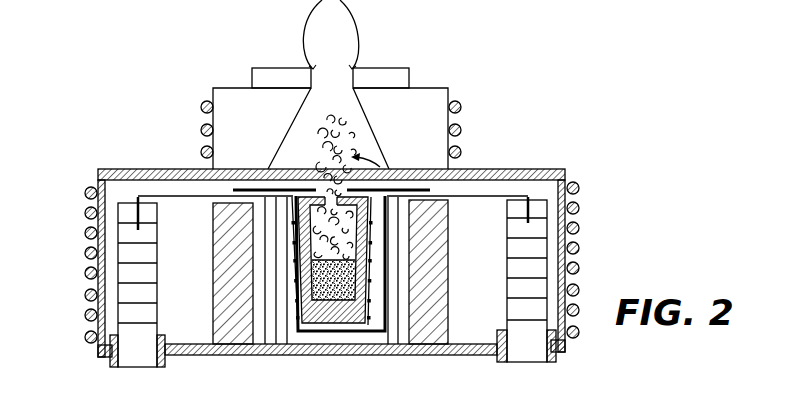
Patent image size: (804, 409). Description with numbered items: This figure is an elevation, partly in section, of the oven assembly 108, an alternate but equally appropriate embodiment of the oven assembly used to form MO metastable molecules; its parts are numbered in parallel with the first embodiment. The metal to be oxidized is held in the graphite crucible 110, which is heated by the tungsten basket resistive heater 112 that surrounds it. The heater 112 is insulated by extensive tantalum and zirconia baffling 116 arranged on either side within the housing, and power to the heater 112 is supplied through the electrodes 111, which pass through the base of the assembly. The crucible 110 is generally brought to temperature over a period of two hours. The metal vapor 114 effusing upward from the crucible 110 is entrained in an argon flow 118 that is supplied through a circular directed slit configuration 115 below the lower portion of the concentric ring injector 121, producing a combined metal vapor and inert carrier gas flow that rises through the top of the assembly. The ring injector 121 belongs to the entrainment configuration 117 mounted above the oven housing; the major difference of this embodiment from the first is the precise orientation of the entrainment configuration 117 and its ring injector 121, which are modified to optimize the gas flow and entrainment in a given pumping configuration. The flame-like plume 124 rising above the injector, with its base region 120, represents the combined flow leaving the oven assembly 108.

The oven assembly 108 is at (76, 310).
The crucible 110 is at (333, 322).
The electrode 111 is at (140, 350).
The resistive heater 112 is at (386, 352).
The metal vapor 114 is at (316, 146).
The directed slit configuration 115 is at (306, 155).
The baffling 116 is at (233, 345).
The entrainment configuration 117 is at (480, 118).
The argon flow 118 is at (276, 168).
The flame base 120 is at (358, 66).
The ring injector 121 is at (400, 68).
The flame 124 is at (347, 6).